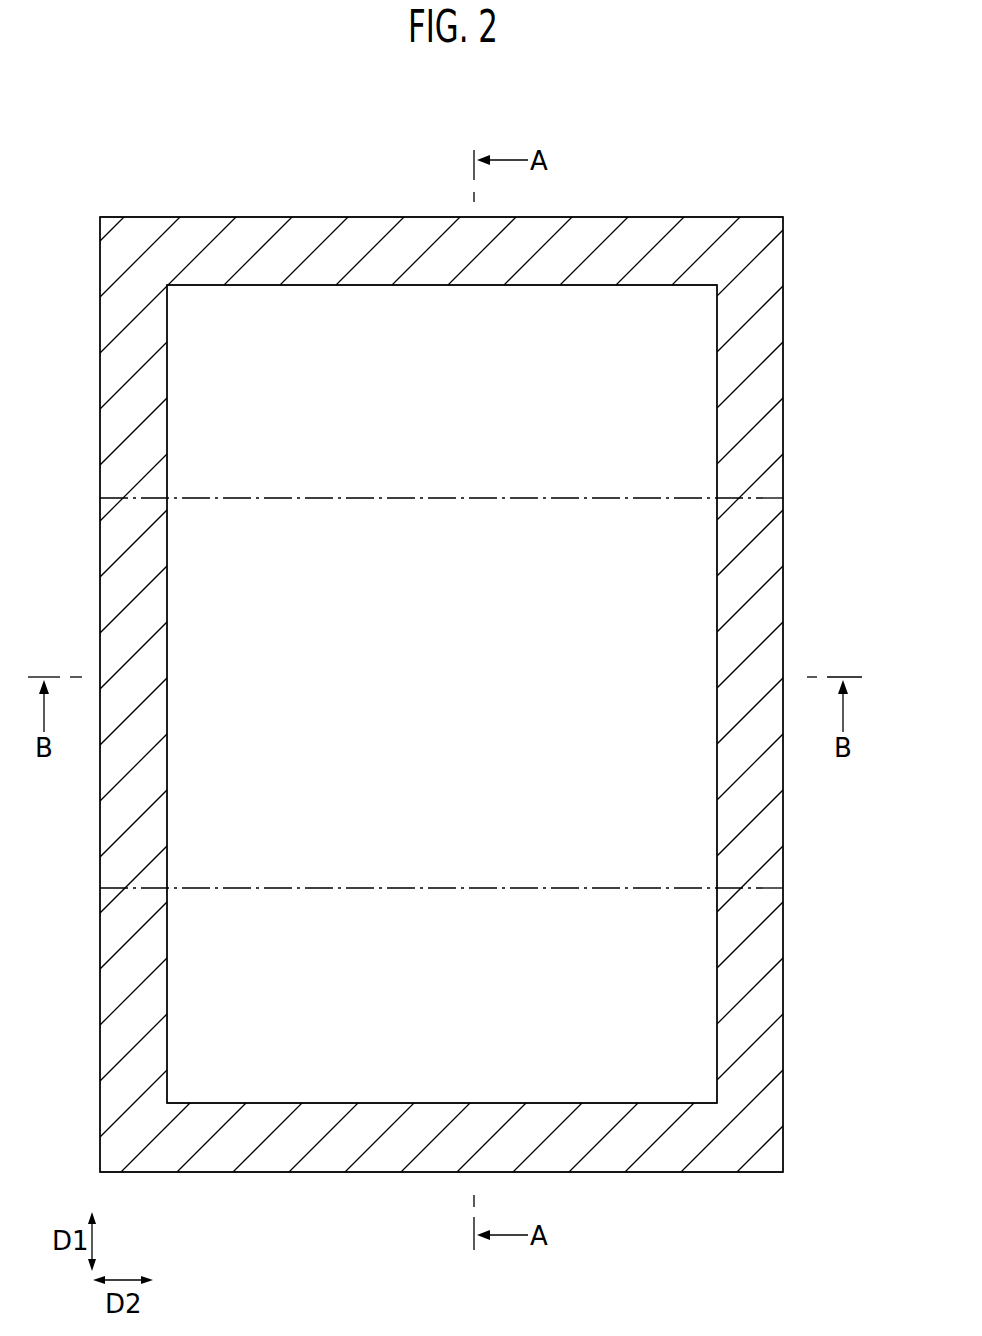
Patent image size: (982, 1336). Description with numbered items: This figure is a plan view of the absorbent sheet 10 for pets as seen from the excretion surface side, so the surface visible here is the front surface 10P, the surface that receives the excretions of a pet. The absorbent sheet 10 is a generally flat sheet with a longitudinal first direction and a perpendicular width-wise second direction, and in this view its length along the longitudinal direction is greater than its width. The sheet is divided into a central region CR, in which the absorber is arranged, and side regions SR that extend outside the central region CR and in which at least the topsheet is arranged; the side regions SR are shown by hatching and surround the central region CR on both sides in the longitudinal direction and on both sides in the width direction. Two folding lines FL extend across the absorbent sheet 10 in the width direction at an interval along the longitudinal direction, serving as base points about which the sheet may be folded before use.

The absorbent sheet for pets 10 is at (765, 205).
The front surface 10P is at (768, 313).
The central region CR is at (626, 1088).
The side regions SR is at (767, 1147).
The folding lines FL is at (758, 498).